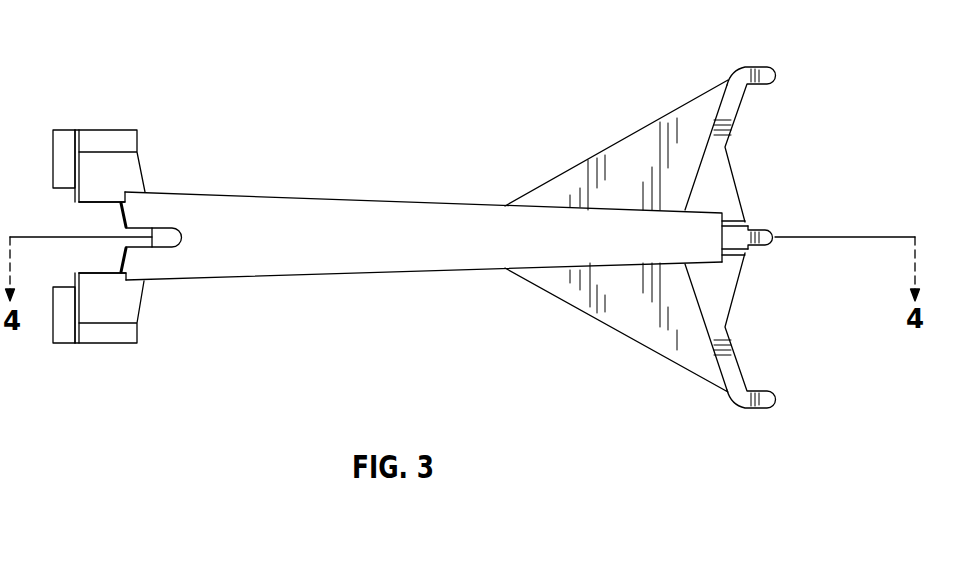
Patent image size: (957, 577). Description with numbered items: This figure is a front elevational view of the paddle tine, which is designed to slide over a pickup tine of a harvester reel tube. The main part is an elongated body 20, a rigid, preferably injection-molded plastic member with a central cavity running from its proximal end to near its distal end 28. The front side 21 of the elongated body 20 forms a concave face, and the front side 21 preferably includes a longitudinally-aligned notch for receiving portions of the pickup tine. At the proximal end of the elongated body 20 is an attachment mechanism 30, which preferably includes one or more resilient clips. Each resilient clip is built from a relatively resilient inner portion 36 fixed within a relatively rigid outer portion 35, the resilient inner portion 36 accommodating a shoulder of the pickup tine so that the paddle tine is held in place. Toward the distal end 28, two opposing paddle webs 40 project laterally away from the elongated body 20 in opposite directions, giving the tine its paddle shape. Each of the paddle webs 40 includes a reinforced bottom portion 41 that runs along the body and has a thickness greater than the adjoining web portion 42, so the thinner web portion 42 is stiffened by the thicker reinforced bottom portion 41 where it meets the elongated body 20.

The attachment mechanism 30 is at (150, 78).
The elongated body 20 is at (400, 249).
The front side 21 is at (420, 255).
The distal end 28 is at (705, 248).
The rigid outer portion 35 is at (100, 305).
The resilient inner portion 36 is at (63, 338).
The paddle webs 40 is at (745, 322).
The reinforced bottom portion 41 is at (733, 103).
The web portion 42 is at (637, 155).